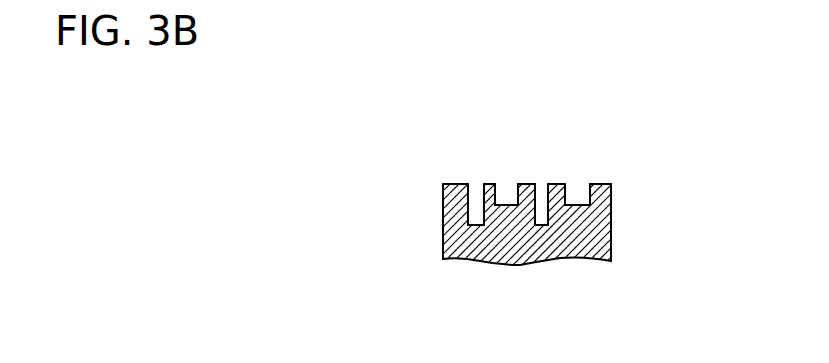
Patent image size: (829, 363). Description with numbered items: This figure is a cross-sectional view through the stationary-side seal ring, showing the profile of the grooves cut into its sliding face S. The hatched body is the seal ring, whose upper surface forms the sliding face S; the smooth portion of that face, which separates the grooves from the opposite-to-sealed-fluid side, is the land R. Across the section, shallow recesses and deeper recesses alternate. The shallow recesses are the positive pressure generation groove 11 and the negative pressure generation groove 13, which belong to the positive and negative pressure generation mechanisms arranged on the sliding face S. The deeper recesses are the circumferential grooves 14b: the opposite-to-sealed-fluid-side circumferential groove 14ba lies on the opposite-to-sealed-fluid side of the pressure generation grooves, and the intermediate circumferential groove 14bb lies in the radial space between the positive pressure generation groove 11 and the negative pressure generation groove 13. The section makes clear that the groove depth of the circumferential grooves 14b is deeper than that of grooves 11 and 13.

The positive pressure generation groove 11 is at (573, 199).
The negative pressure generation groove 13 is at (505, 198).
The circumferential groove 14b is at (330, 50).
The opposite-to-sealed-fluid-side circumferential groove 14ba is at (476, 196).
The intermediate circumferential groove 14bb is at (545, 200).
The land R is at (443, 184).
The sliding face S is at (603, 184).